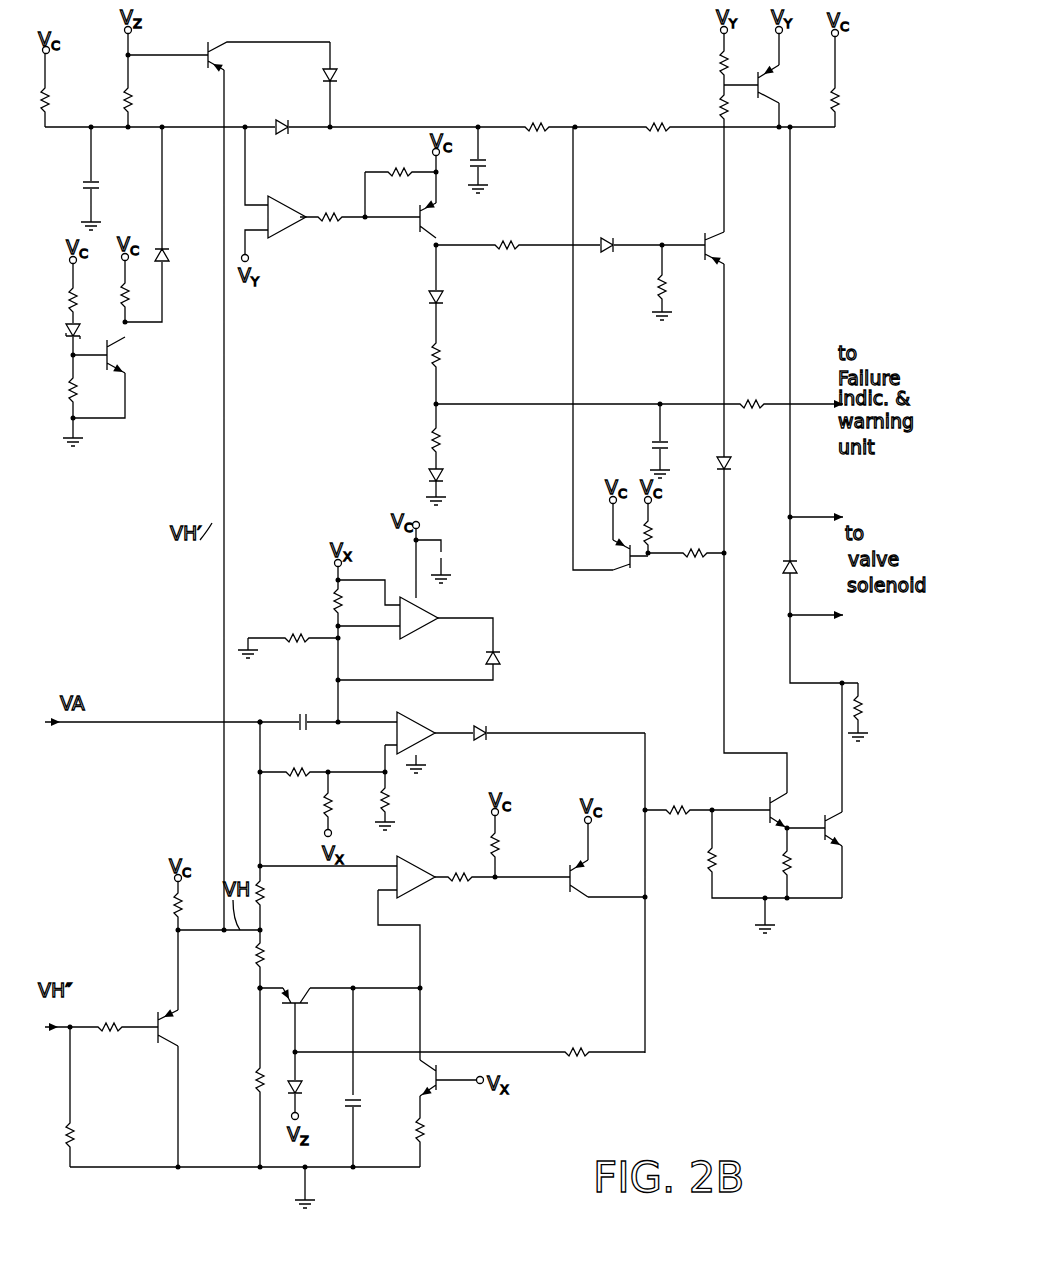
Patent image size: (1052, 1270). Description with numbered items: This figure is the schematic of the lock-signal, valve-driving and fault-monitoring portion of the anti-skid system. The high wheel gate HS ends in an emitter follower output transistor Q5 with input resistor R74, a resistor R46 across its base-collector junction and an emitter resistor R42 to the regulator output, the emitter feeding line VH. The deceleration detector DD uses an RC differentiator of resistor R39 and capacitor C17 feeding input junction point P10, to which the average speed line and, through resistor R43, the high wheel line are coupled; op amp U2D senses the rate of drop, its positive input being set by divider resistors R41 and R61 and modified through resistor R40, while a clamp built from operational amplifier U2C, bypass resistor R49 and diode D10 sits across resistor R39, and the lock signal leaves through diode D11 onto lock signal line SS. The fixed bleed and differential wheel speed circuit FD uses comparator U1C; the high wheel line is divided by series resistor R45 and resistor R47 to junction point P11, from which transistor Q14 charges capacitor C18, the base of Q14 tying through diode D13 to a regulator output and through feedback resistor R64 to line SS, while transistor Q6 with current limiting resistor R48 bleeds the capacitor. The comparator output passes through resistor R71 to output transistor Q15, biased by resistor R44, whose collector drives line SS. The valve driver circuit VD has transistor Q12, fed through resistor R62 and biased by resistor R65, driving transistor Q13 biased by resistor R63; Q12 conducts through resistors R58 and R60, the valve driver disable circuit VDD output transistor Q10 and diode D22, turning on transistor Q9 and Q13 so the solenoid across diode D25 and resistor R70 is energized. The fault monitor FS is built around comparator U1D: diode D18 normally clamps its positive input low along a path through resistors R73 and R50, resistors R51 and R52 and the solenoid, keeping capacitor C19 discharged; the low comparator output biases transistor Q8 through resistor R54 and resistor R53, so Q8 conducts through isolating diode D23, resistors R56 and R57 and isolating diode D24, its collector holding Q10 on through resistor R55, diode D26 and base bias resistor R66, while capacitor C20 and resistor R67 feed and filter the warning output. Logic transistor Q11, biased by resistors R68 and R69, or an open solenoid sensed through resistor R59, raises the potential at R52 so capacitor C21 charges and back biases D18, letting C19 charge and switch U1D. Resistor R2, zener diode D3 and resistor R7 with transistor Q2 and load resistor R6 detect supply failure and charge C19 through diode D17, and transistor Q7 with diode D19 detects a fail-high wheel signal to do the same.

The resistor R73 is at (65, 100).
The resistor R50 is at (148, 100).
The transistor Q7 is at (269, 57).
The diode D19 is at (352, 84).
The diode D18 is at (287, 140).
The comparator U1D is at (280, 218).
The resistor R54 is at (334, 230).
The resistor R53 is at (395, 162).
The transistor Q8 is at (440, 219).
The resistor R51 is at (535, 116).
The capacitor C21 is at (498, 166).
The resistor R52 is at (660, 142).
The resistor R58 is at (705, 63).
The resistor R60 is at (705, 107).
The transistor Q9 is at (778, 84).
The resistor R59 is at (855, 100).
The timing capacitor C19 is at (111, 189).
The resistor R2 is at (59, 298).
The zener diode D3 is at (54, 332).
The resistor R7 is at (57, 390).
The transistor Q2 is at (126, 356).
The load resistor R6 is at (139, 295).
The diode D17 is at (183, 256).
The resistor R55 is at (506, 259).
The diode D26 is at (612, 259).
The base bias resistor R66 is at (681, 287).
The output transistor Q10 is at (731, 248).
The valve driver disable circuit VDD is at (760, 212).
The isolating diode D23 is at (456, 299).
The resistor R56 is at (456, 355).
The resistor R57 is at (456, 440).
The isolating diode D24 is at (456, 479).
The resistor R67 is at (751, 395).
The capacitor C20 is at (680, 447).
The diode D22 is at (744, 465).
The logic transistor Q11 is at (607, 554).
The resistor R68 is at (668, 533).
The resistor R69 is at (688, 567).
The diode D25 is at (808, 570).
The resistor R70 is at (879, 708).
The resistor R39 is at (316, 602).
The operational amplifier U2C is at (412, 619).
The bypass resistor R49 is at (301, 653).
The diode D10 is at (515, 662).
The capacitor C17 is at (305, 737).
The operational amplifier U2D is at (403, 734).
The diode D11 is at (491, 746).
The resistor R40 is at (296, 785).
The divider resistor R41 is at (348, 805).
The divider resistor R61 is at (405, 800).
The comparator U1C is at (407, 874).
The resistor R44 is at (516, 845).
The resistor R71 is at (461, 890).
The output transistor Q15 is at (595, 878).
The resistor R62 is at (681, 799).
The transistor Q12 is at (793, 811).
The transistor Q13 is at (850, 830).
The bias resistor R65 is at (732, 860).
The bias resistor R63 is at (807, 863).
The emitter resistor R42 is at (157, 905).
The resistor R43 is at (280, 893).
The series resistor R45 is at (280, 955).
The emitter follower output transistor Q5 is at (177, 1027).
The input resistor R74 is at (113, 1016).
The resistor R46 is at (92, 1135).
The resistor R47 is at (240, 1080).
The transistor Q14 is at (314, 1002).
The diode D13 is at (315, 1089).
The capacitor C18 is at (373, 1106).
The transistor Q6 is at (417, 1079).
The current limiting resistor R48 is at (440, 1130).
The feedback resistor R64 is at (581, 1042).
The fault monitor FS is at (355, 370).
The deceleration detector DD is at (545, 712).
The lock signal line SS is at (650, 764).
The fixed bleed and differential wheel speed circuit FD is at (655, 988).
The high wheel gate HS is at (157, 1172).
The valve driver circuit VD is at (847, 910).
The input junction point P10 is at (260, 722).
The junction point P11 is at (260, 988).